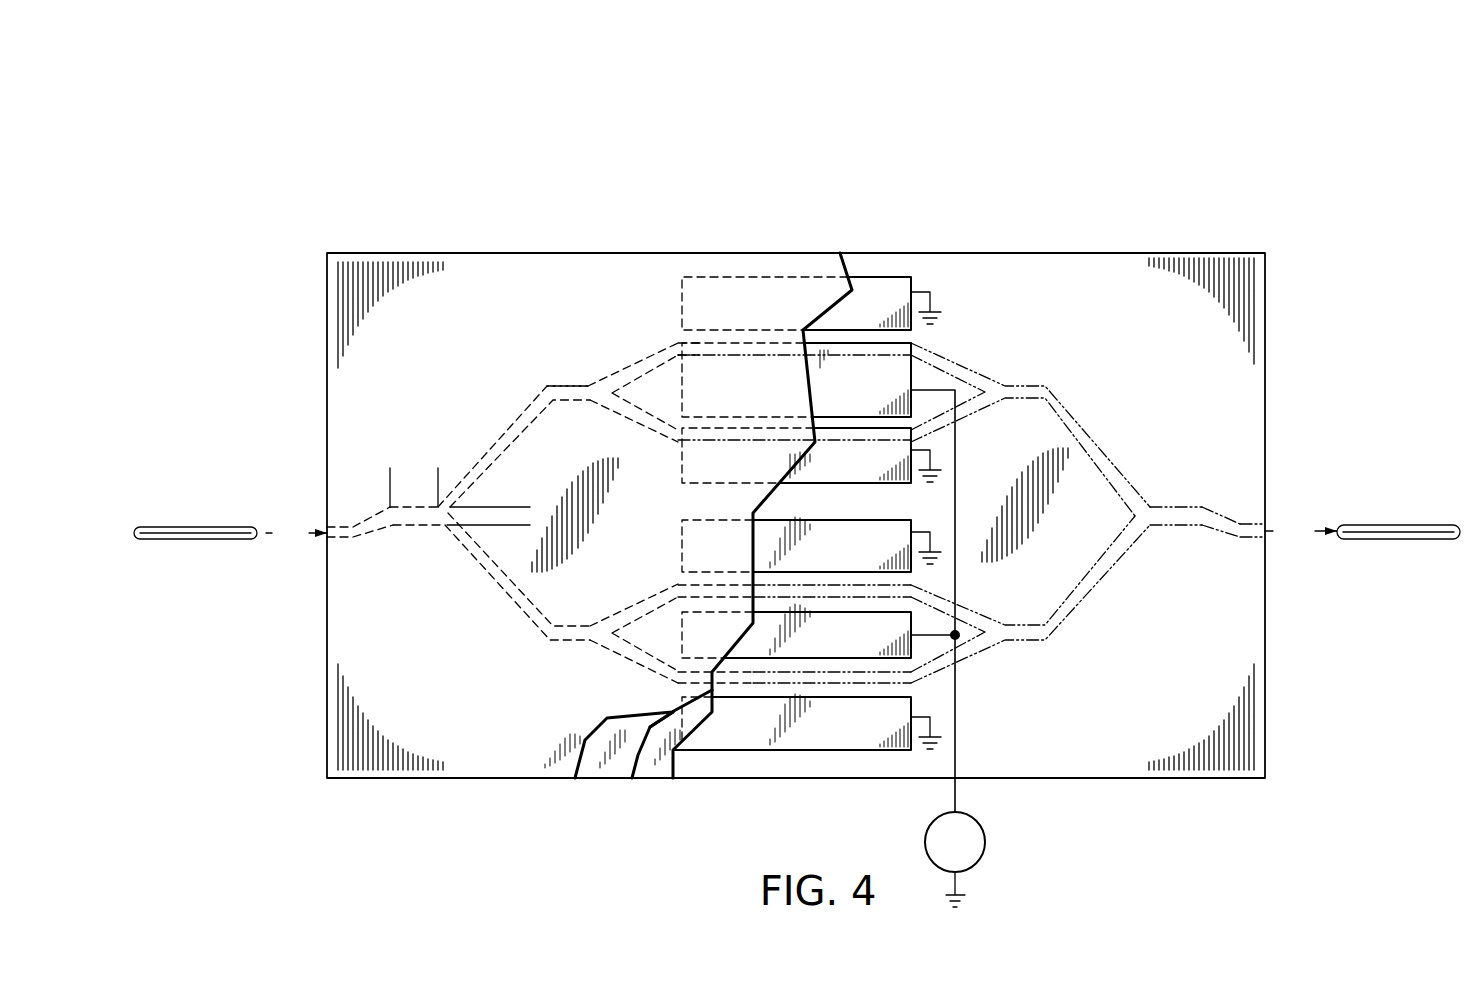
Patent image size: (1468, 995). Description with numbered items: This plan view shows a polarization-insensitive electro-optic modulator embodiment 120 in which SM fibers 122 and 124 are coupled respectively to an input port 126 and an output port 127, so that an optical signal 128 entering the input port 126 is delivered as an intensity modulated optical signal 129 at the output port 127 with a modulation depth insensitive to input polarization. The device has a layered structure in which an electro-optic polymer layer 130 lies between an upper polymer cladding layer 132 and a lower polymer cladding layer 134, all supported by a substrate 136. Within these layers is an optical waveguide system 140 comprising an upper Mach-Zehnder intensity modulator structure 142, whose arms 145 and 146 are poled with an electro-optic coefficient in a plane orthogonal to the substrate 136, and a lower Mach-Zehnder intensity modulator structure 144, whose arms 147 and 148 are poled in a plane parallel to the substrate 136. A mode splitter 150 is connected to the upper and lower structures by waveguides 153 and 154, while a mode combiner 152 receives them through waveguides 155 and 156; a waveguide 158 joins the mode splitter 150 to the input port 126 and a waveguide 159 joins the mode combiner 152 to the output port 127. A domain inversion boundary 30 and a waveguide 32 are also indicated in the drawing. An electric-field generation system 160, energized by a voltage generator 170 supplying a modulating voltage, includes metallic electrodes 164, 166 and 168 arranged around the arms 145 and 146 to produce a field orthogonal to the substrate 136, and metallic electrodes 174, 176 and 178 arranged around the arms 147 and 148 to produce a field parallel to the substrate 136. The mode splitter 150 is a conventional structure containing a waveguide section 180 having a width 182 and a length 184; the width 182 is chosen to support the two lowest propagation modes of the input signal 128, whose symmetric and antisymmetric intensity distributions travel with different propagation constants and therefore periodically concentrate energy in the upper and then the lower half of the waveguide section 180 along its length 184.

The domain inversion boundary 30 is at (900, 268).
The waveguide 32 is at (668, 355).
The modulator embodiment 120 is at (1104, 245).
The SM fiber 122 is at (244, 525).
The SM fiber 124 is at (1397, 523).
The input port 126 is at (330, 538).
The output port 127 is at (1275, 540).
The optical signal 128 is at (296, 534).
The intensity modulated optical signal 129 is at (1301, 532).
The electro-optic polymer layer 130 is at (600, 760).
The upper polymer cladding layer 132 is at (525, 743).
The lower polymer cladding layer 134 is at (650, 763).
The substrate 136 is at (1145, 752).
The optical waveguide system 140 is at (547, 380).
The upper Mach-Zehnder intensity modulator structure 142 is at (670, 345).
The lower Mach-Zehnder intensity modulator structure 144 is at (670, 582).
The arm 145 is at (775, 358).
The arm 146 is at (708, 436).
The arm 147 is at (715, 597).
The arm 148 is at (680, 688).
The mode splitter 150 is at (415, 532).
The mode combiner 152 is at (1180, 505).
The waveguide 153 is at (547, 398).
The waveguide 154 is at (548, 630).
The waveguide 155 is at (1105, 448).
The waveguide 156 is at (1100, 590).
The waveguide 158 is at (353, 540).
The waveguide 159 is at (1230, 545).
The electric-field generation system 160 is at (967, 312).
The metallic electrode 164 is at (911, 283).
The metallic electrode 166 is at (915, 360).
The metallic electrode 168 is at (875, 485).
The voltage generator 170 is at (985, 838).
The metallic electrode 174 is at (785, 520).
The metallic electrode 176 is at (823, 598).
The metallic electrode 178 is at (815, 755).
The waveguide section 180 is at (393, 510).
The width 182 is at (527, 550).
The length 184 is at (352, 477).